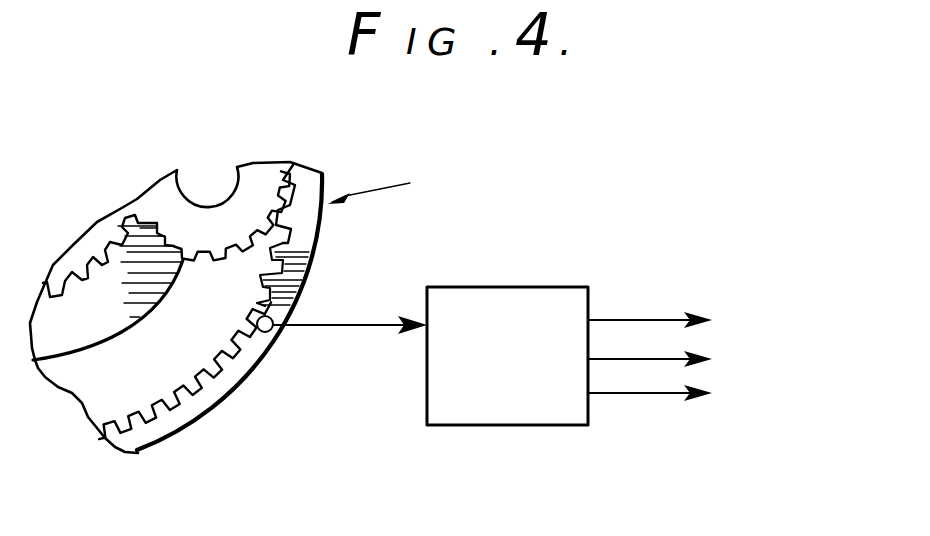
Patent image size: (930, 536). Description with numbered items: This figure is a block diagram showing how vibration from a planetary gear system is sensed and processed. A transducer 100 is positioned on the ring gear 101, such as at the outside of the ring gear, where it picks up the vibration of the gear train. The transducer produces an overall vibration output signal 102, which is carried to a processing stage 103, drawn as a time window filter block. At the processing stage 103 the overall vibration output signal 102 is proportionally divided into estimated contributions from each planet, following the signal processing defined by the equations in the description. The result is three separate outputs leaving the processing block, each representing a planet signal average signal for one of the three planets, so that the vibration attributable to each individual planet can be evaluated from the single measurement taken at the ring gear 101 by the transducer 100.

The transducer 100 is at (272, 333).
The ring gear 101 is at (157, 427).
The overall vibration output signal 102 is at (355, 323).
The signal processing (time window filter) 103 is at (530, 422).